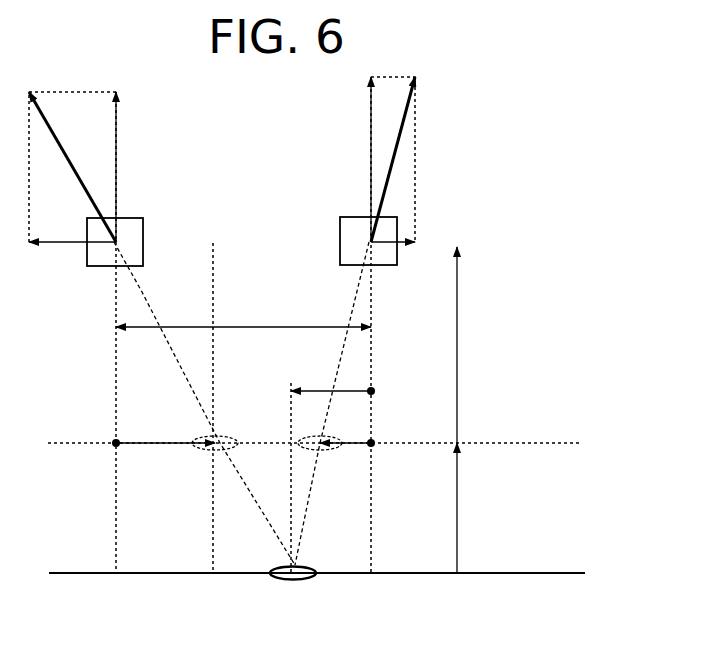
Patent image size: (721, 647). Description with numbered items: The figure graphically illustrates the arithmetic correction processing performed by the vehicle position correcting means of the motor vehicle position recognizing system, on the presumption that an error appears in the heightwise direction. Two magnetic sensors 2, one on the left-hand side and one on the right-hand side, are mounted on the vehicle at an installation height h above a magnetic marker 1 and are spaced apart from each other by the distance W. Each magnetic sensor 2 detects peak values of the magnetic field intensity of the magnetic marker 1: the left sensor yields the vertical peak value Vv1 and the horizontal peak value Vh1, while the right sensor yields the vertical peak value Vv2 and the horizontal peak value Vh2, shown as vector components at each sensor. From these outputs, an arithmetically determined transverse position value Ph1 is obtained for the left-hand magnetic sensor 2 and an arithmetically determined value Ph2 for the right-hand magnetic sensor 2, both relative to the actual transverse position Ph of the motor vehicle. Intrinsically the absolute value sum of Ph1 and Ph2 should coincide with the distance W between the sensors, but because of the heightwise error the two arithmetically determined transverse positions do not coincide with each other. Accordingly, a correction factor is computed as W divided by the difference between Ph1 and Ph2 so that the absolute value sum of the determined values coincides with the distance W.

The magnetic marker 1 is at (307, 579).
The magnetic sensor 2 is at (143, 224).
The peak value of vertical magnetic field intensity of the left magnetic sensor Vv1 is at (136, 167).
The peak value of horizontal magnetic field intensity of the left magnetic sensor Vh1 is at (72, 269).
The peak value of vertical magnetic field intensity of the right magnetic sensor Vv2 is at (344, 159).
The peak value of horizontal magnetic field intensity of the right magnetic sensor Vh2 is at (400, 268).
The distance between the magnetic sensors W is at (243, 315).
The installation height h is at (465, 345).
The actual transverse position of the motor vehicle Ph is at (333, 382).
The arithmetically determined transverse position value based on the left magnetic s Ph1 is at (175, 432).
The arithmetically determined transverse position value based on the right magnetic Ph2 is at (336, 431).